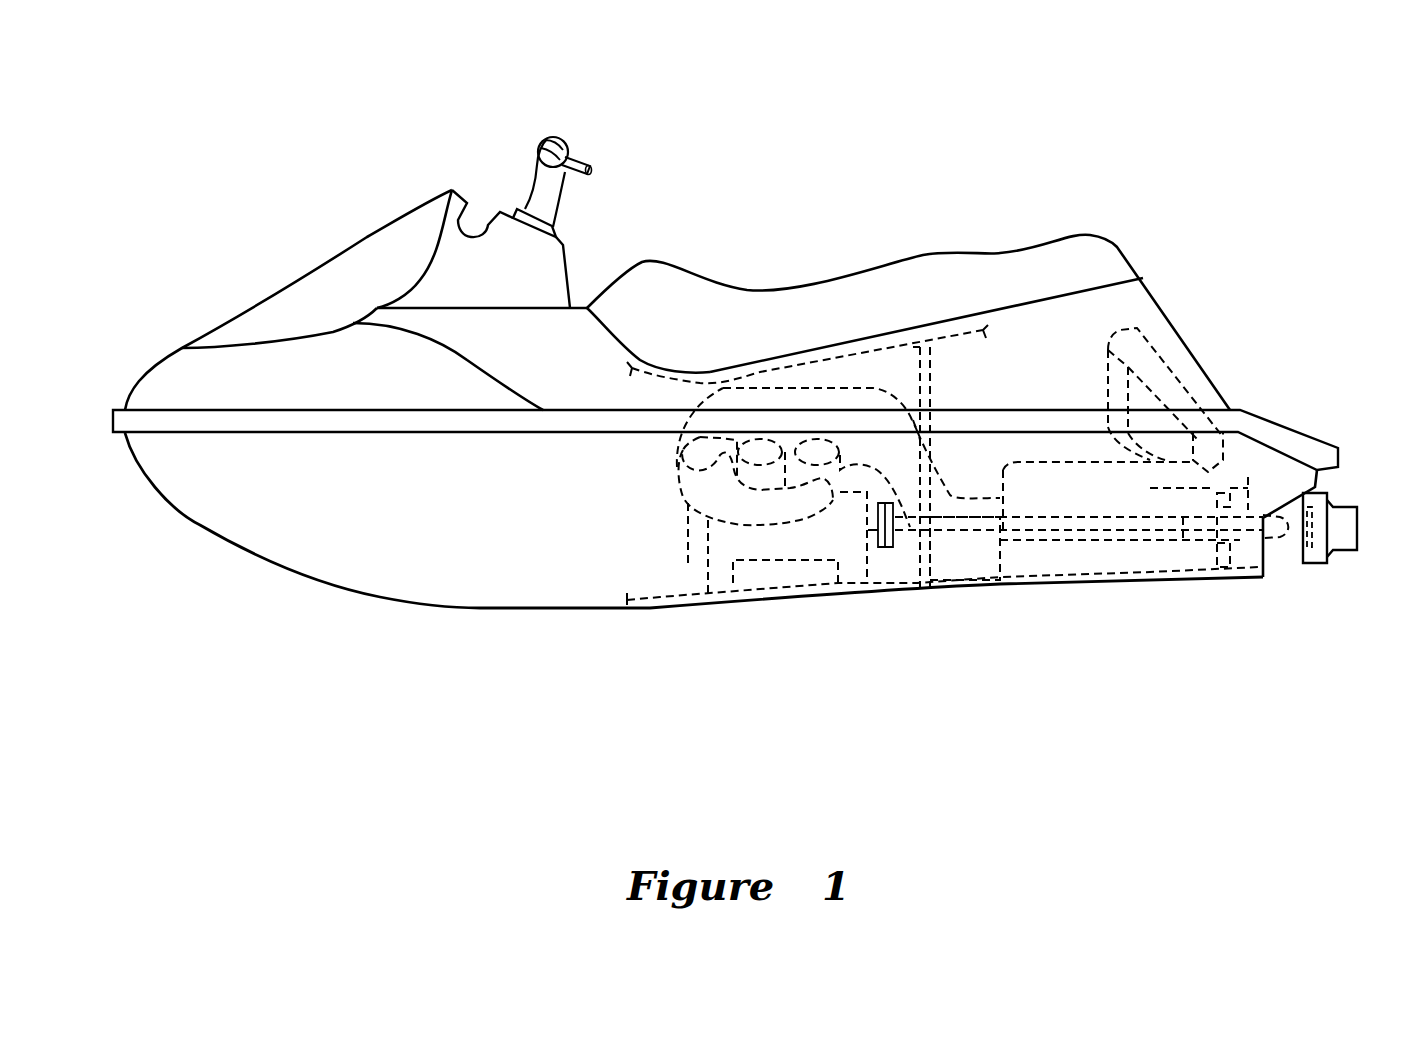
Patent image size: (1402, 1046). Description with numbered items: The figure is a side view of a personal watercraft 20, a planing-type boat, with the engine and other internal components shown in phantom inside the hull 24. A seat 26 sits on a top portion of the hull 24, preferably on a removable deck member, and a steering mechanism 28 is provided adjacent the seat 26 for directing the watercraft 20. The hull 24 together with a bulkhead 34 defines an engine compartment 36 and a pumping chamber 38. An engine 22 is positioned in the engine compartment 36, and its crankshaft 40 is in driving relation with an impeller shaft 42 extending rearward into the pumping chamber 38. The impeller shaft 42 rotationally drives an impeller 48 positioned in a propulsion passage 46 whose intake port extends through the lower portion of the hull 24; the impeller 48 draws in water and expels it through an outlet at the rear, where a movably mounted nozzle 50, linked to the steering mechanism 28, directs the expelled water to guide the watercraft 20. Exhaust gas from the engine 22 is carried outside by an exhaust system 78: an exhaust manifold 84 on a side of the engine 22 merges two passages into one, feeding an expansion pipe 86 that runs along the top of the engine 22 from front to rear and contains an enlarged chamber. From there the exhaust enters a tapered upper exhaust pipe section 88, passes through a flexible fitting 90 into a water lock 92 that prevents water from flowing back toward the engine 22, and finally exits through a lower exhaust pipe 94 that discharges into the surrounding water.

The personal watercraft 20 is at (428, 130).
The engine 22 is at (770, 542).
The hull 24 is at (325, 555).
The seat 26 is at (860, 297).
The steering mechanism 28 is at (585, 155).
The bulkhead 34 is at (912, 583).
The engine compartment 36 is at (552, 562).
The pumping chamber 38 is at (977, 477).
The crankshaft 40 is at (878, 595).
The impeller shaft 42 is at (1058, 580).
The propulsion passage 46 is at (1118, 563).
The impeller 48 is at (1240, 483).
The nozzle 50 is at (1347, 547).
The exhaust system 78 is at (763, 387).
The exhaust manifold 84 is at (670, 488).
The expansion pipe 86 is at (708, 400).
The upper exhaust pipe section 88 is at (887, 393).
The flexible fitting 90 is at (966, 585).
The water lock 92 is at (1050, 450).
The lower exhaust pipe 94 is at (1172, 370).